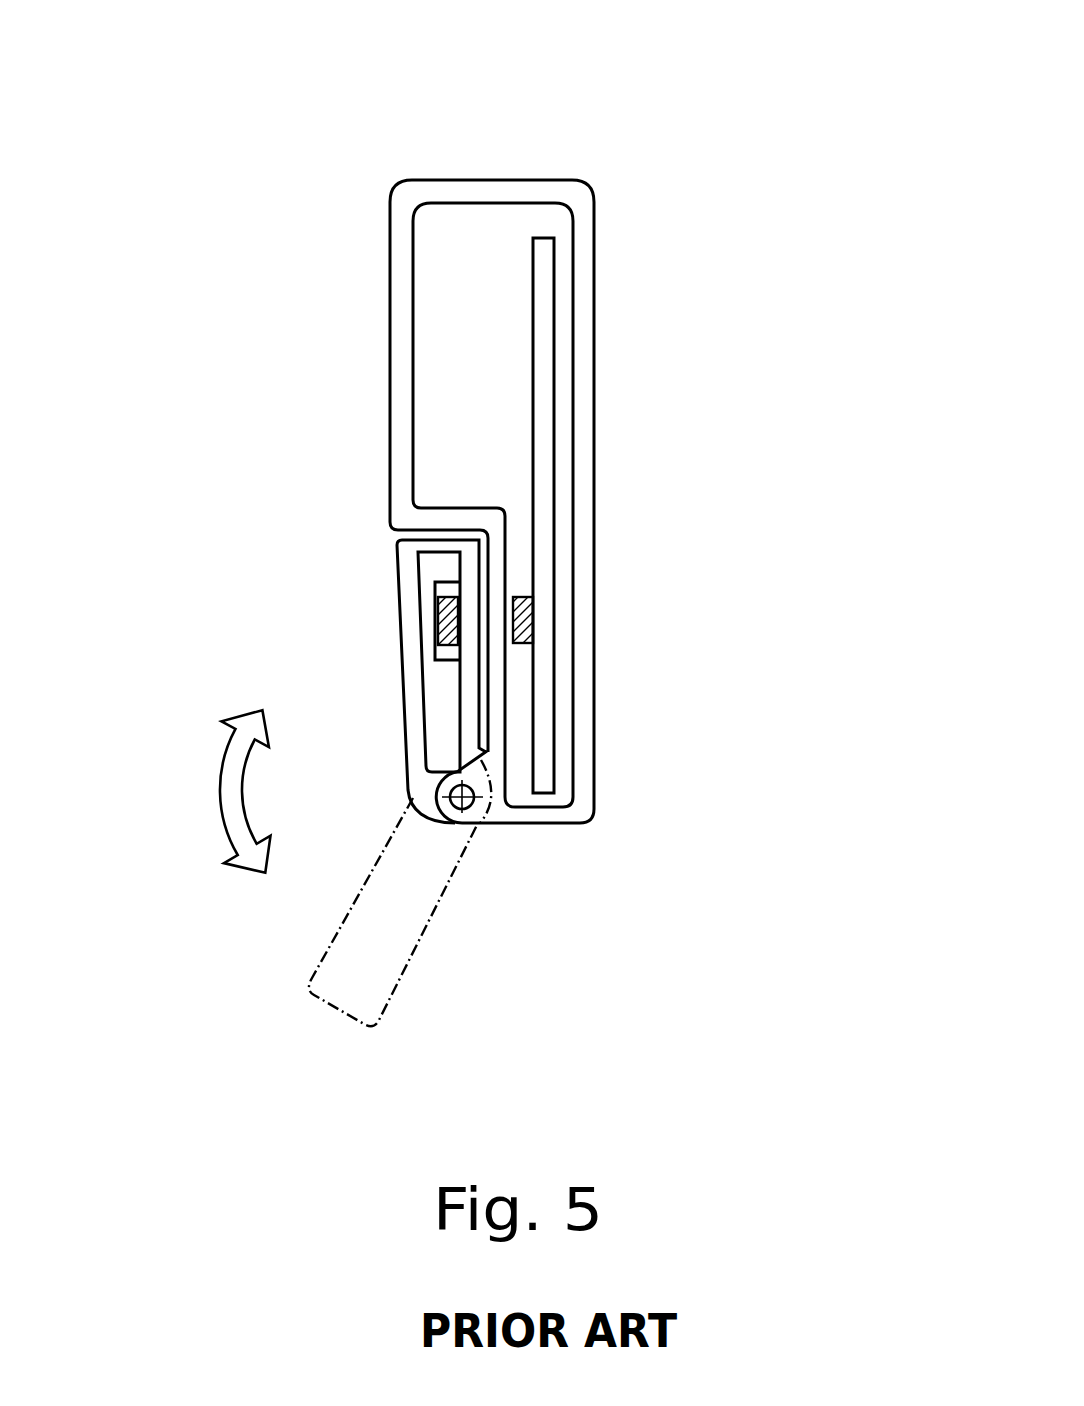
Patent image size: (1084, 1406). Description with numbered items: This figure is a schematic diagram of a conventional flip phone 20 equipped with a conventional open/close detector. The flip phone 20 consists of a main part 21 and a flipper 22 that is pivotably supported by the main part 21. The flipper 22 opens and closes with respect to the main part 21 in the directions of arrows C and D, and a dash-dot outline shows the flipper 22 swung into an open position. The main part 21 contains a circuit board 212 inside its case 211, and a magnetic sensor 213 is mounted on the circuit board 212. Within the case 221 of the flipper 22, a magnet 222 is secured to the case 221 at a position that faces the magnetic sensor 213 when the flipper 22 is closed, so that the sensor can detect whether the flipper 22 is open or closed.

The flip phone 20 is at (632, 118).
The main part 21 is at (367, 230).
The case 211 is at (390, 332).
The circuit board 212 is at (547, 300).
The magnetic sensor 213 is at (520, 598).
The flipper 22 is at (377, 657).
The case 221 is at (397, 578).
The magnet 222 is at (438, 641).